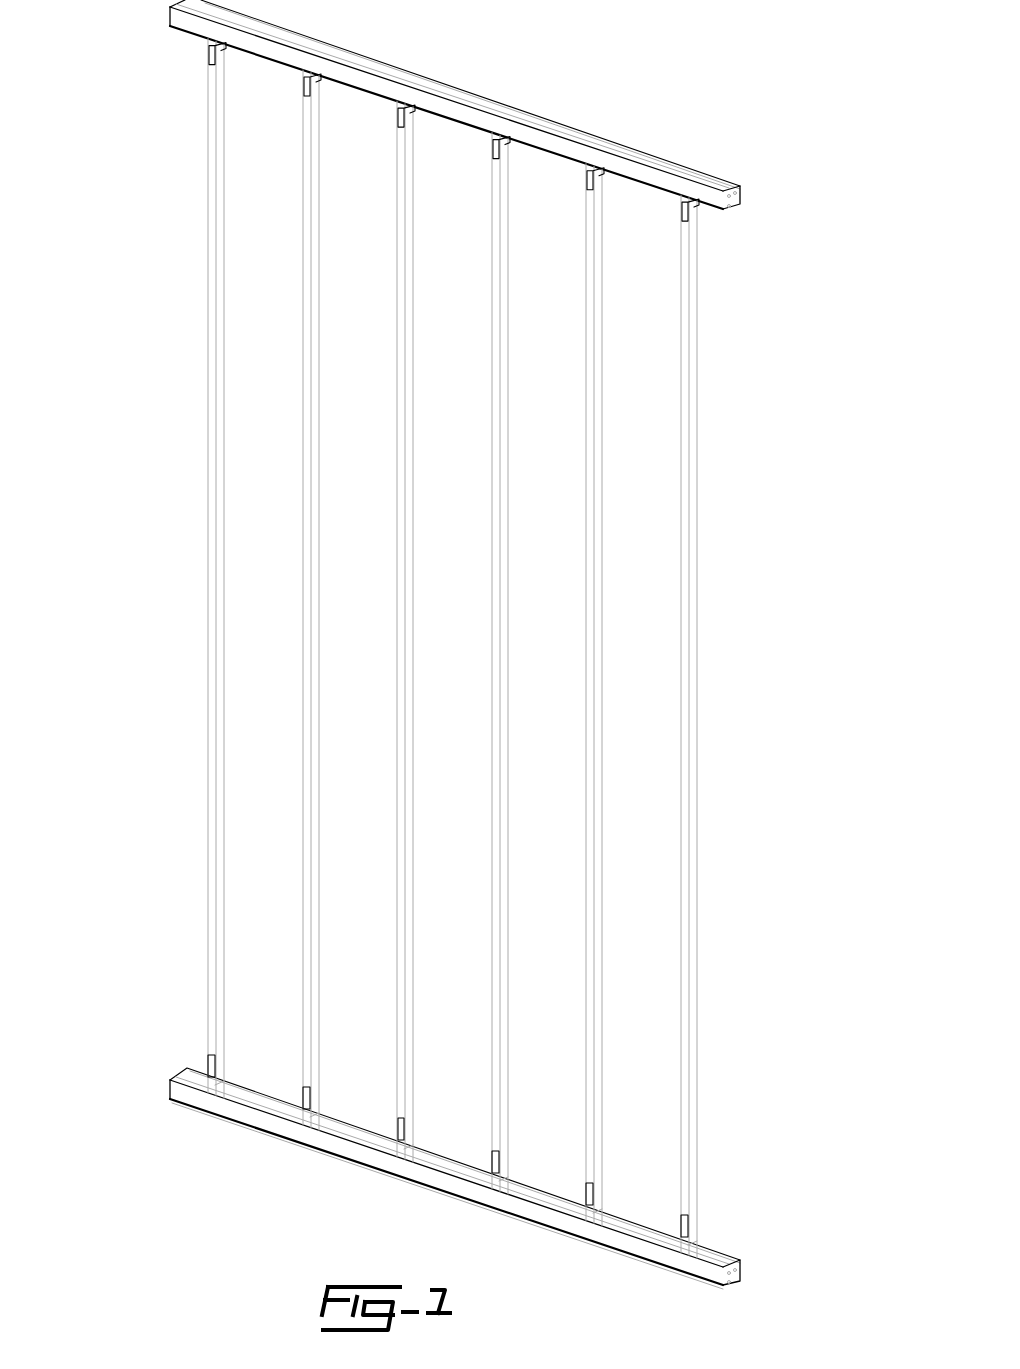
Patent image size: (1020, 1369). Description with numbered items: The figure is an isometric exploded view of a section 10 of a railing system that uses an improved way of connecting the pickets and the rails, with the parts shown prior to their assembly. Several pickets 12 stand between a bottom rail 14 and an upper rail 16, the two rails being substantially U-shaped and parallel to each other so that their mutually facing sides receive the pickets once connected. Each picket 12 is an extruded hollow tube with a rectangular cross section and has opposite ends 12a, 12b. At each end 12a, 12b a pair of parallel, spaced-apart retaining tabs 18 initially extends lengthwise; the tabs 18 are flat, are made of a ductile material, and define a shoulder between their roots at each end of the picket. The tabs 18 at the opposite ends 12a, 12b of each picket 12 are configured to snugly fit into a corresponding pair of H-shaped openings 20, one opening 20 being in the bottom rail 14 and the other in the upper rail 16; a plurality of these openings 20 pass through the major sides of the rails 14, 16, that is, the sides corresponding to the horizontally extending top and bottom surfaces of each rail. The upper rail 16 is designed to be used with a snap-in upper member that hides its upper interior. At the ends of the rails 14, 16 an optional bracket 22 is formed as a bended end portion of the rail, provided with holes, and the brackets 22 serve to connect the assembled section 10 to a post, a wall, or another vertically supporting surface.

The section of a railing system 10 is at (142, 302).
The picket 12 is at (307, 730).
The end of the picket 12a is at (295, 1098).
The end of the picket 12b is at (603, 210).
The bottom rail 14 is at (230, 1108).
The upper rail 16 is at (188, 18).
The retaining tabs 18 is at (406, 122).
The H-shaped openings 20 is at (400, 1150).
The bracket 22 is at (736, 201).